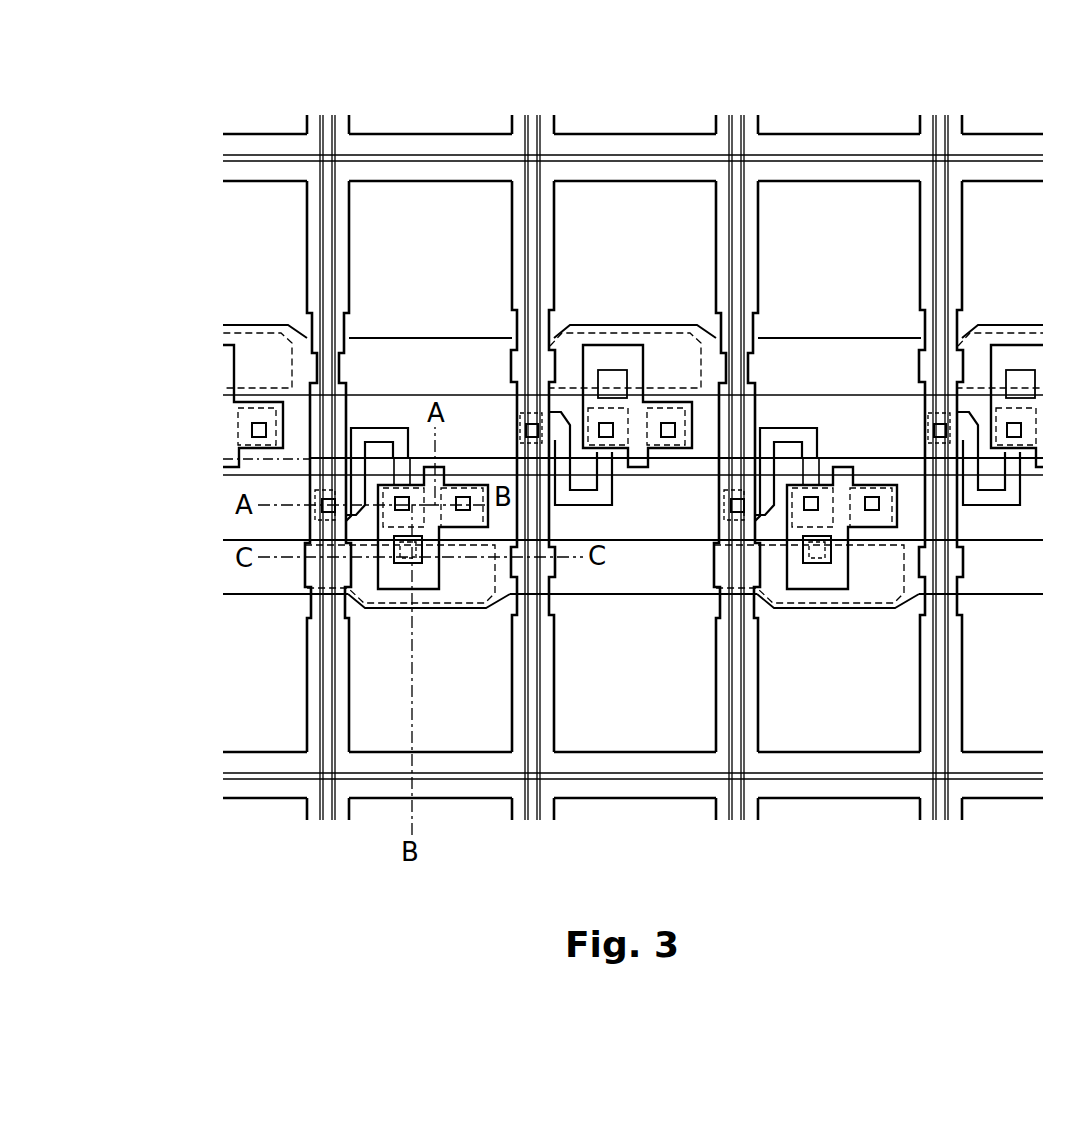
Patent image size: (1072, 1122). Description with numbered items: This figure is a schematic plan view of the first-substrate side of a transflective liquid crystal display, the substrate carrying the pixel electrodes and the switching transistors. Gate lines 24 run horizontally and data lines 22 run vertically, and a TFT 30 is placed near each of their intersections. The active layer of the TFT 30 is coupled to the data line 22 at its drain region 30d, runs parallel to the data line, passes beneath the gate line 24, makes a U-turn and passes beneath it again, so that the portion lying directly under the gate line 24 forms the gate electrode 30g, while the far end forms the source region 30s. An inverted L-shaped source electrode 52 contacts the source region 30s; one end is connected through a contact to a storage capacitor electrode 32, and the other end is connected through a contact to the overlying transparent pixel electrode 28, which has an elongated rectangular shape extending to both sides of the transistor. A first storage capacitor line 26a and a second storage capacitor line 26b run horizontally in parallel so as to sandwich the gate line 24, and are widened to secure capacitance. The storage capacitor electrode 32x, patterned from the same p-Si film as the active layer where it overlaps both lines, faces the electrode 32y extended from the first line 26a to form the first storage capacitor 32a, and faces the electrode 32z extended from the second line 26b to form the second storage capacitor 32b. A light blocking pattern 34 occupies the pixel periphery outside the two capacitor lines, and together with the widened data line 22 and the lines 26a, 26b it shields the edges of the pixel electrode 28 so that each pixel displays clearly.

The data line 22 is at (271, 438).
The gate line 24 is at (225, 463).
The first storage capacitor line 26a is at (302, 338).
The second storage capacitor line 26b is at (228, 585).
The pixel electrode 28 is at (392, 154).
The TFT 30 is at (413, 446).
The drain region 30d is at (373, 429).
The gate electrode 30g is at (403, 426).
The source region 30s is at (433, 463).
The storage capacitor electrode 32 is at (400, 611).
The first storage capacitor 32a is at (700, 443).
The second storage capacitor 32b is at (838, 588).
The storage capacitor electrode 32x is at (704, 462).
The storage capacitor electrode 32y is at (641, 349).
The storage capacitor electrode 32z is at (847, 603).
The light blocking pattern 34 is at (613, 145).
The source electrode 52 is at (393, 601).